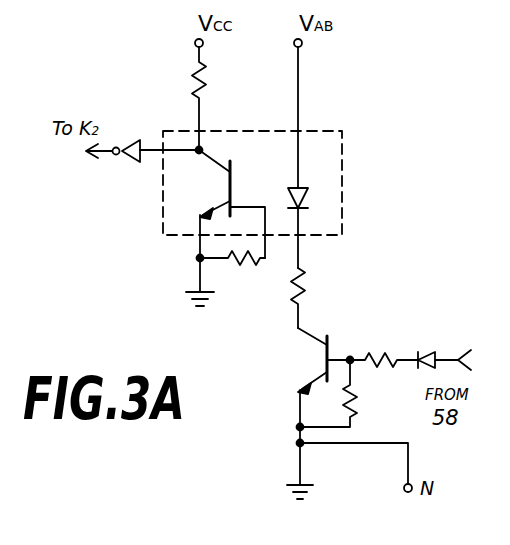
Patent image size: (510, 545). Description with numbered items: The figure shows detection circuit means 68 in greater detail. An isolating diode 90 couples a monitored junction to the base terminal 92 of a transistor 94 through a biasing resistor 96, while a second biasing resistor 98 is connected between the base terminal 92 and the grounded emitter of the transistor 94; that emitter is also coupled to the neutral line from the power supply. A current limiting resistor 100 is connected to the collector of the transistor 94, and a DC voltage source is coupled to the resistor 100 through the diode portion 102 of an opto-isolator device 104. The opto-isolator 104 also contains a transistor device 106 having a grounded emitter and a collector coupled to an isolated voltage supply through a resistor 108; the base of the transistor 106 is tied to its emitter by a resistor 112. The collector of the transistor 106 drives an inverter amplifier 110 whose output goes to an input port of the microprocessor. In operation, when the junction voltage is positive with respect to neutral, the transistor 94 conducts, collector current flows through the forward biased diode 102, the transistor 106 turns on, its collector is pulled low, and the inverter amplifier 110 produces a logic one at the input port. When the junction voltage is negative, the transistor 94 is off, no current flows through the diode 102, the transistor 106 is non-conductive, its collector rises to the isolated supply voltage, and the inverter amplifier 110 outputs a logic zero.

The detection circuit means 68 is at (373, 199).
The isolating diode 90 is at (427, 350).
The base terminal 92 is at (353, 358).
The transistor 94 is at (332, 347).
The biasing resistor 96 is at (379, 354).
The biasing resistor 98 is at (355, 398).
The current limiting resistor 100 is at (307, 289).
The diode portion 102 is at (280, 163).
The opto-isolator device 104 is at (322, 131).
The transistor device 106 is at (225, 188).
The resistor 108 is at (205, 85).
The inverter amplifier 110 is at (124, 140).
The resistor 112 is at (238, 265).